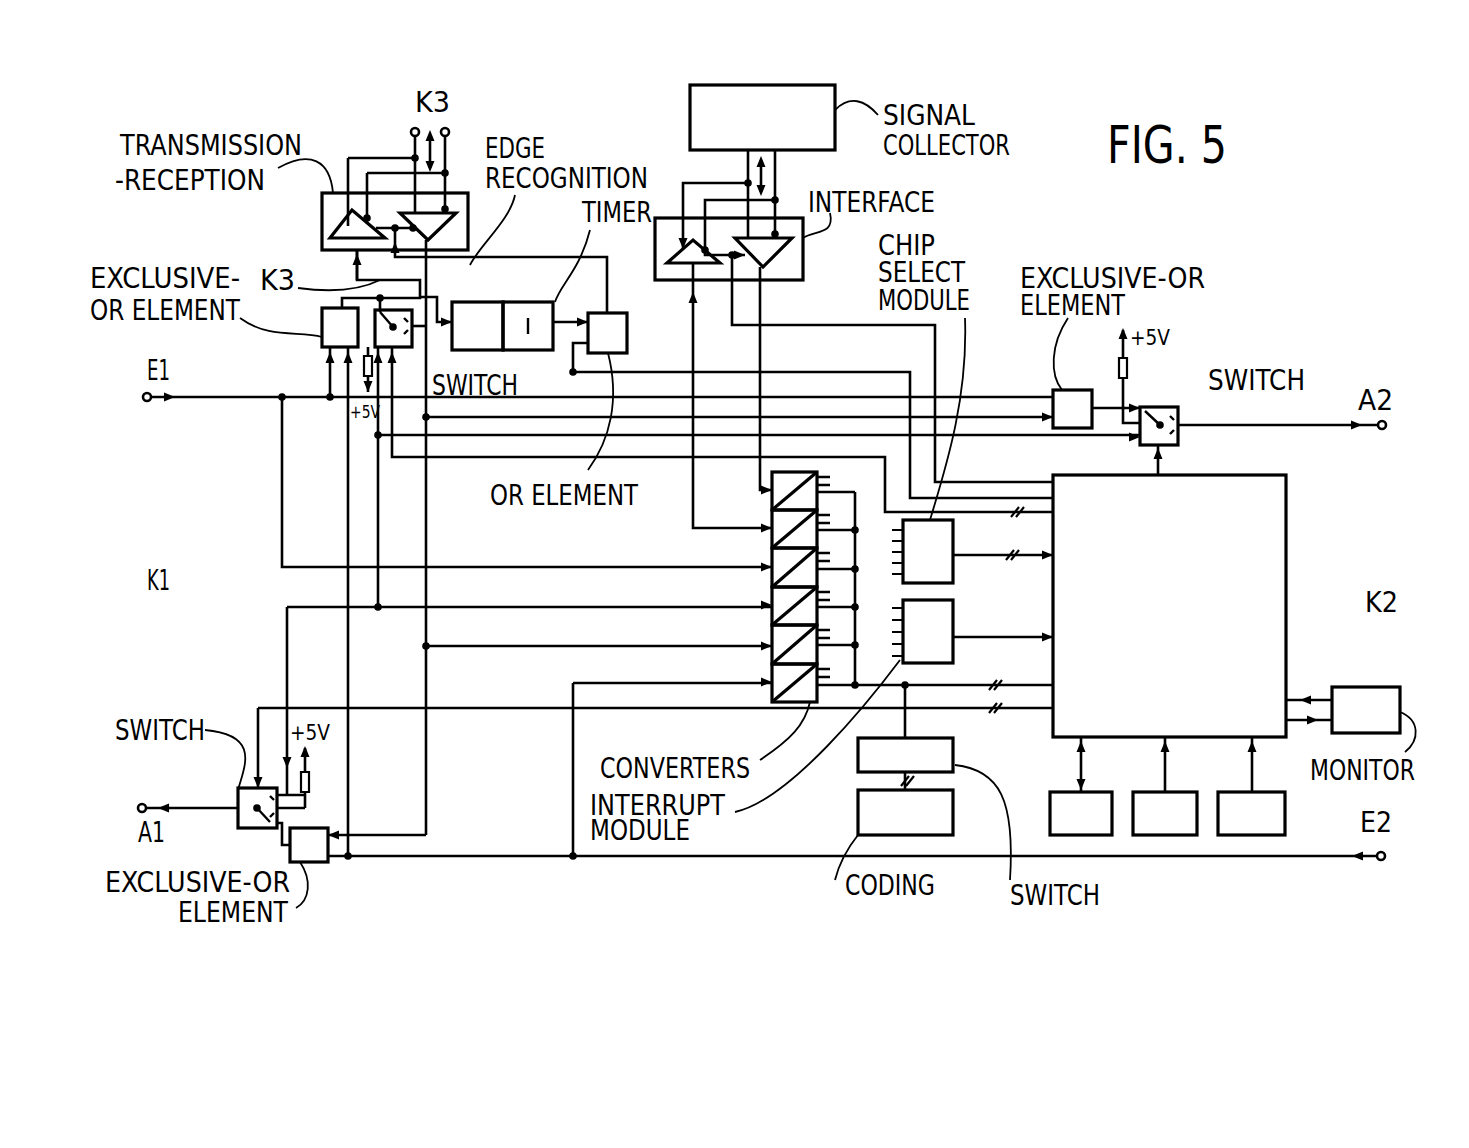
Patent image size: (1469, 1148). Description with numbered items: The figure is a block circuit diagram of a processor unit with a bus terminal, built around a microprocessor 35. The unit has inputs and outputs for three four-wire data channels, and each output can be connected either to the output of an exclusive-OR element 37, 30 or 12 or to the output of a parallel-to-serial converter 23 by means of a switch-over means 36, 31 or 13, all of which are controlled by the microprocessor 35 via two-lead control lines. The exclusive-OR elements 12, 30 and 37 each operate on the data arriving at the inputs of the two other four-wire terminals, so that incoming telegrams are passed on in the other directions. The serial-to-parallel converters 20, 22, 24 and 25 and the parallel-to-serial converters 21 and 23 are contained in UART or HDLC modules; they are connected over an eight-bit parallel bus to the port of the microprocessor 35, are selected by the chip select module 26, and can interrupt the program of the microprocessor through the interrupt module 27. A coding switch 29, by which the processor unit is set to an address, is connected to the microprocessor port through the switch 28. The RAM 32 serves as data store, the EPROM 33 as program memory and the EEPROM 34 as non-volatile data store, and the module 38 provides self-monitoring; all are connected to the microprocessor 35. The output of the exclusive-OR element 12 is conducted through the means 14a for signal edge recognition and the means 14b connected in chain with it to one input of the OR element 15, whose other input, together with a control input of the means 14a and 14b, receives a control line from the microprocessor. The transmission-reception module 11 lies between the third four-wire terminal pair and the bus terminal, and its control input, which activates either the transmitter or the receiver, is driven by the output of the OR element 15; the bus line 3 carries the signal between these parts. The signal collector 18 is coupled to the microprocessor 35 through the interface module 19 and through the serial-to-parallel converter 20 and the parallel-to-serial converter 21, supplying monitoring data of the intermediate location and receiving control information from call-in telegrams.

The bus line 3 is at (357, 270).
The transmission-reception module 11 is at (322, 208).
The exclusive-OR element 12 is at (322, 330).
The switch-over means 13 is at (405, 347).
The means for signal edge recognition 14a is at (485, 302).
The means connected in chain 14b is at (535, 302).
The OR element 15 is at (627, 345).
The signal collector 18 is at (690, 137).
The interface module 19 is at (803, 268).
The serial-to-parallel converter 20 is at (772, 506).
The parallel-to-serial converter 21 is at (772, 546).
The serial-to-parallel converter 22 is at (772, 584).
The parallel-to-serial converter 23 is at (772, 624).
The serial-to-parallel converter 24 is at (772, 661).
The serial-to-parallel converter 25 is at (790, 702).
The chip select module 26 is at (953, 551).
The interrupt module 27 is at (953, 617).
The switch 28 is at (953, 750).
The coding switch 29 is at (953, 805).
The exclusive-OR element 30 is at (1090, 390).
The switch-over means 31 is at (1205, 382).
The RAM 32 is at (1100, 792).
The EPROM 33 is at (1188, 792).
The EEPROM 34 is at (1274, 792).
The microprocessor 35 is at (1286, 558).
The switch-over means 36 is at (238, 830).
The exclusive-OR element 37 is at (322, 862).
The module for self-monitoring 38 is at (1385, 687).